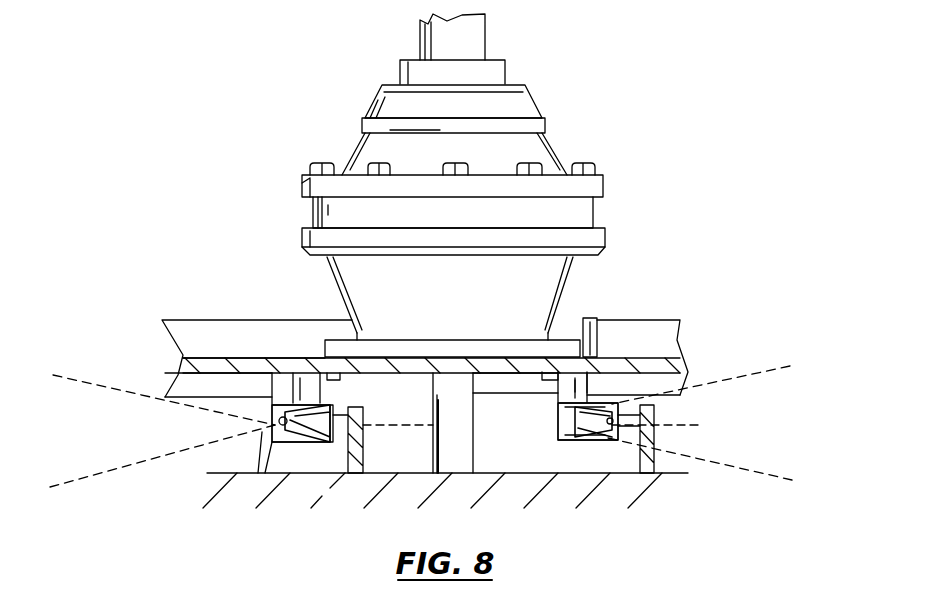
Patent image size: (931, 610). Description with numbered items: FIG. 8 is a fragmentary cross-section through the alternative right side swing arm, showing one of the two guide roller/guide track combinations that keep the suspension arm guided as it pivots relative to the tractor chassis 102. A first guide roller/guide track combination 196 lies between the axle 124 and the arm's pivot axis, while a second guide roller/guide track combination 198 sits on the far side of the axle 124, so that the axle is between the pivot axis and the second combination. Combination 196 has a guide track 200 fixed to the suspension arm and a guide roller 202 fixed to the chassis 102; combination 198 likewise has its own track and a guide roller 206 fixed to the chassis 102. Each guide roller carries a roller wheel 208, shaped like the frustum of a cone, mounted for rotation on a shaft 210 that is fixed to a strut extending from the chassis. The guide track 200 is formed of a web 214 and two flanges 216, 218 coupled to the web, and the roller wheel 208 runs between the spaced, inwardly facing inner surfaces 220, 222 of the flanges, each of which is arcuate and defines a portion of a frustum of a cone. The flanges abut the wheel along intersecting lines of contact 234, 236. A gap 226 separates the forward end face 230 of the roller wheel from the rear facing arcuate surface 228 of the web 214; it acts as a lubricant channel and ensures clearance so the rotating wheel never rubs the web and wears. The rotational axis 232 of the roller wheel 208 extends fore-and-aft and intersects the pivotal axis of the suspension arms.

The chassis 102 is at (233, 473).
The axle 124 is at (486, 31).
The first guide roller/guide track combination 196 is at (213, 248).
The second guide roller/guide track combination 198 is at (657, 160).
The guide track 200 is at (280, 415).
The guide roller 202 is at (348, 452).
The guide roller 206 is at (672, 432).
The roller wheel 208 is at (300, 405).
The shaft 210 is at (350, 405).
The web 214 is at (270, 425).
The flange 216 is at (272, 432).
The flange 218 is at (295, 405).
The inner surface 220 is at (262, 432).
The inner surface 222 is at (278, 420).
The gap 226 is at (273, 420).
The rear facing arcuate surface 228 is at (557, 407).
The end face 230 is at (558, 420).
The rotational axis 232 is at (385, 425).
The line of contact 234 is at (73, 377).
The line of contact 236 is at (55, 490).